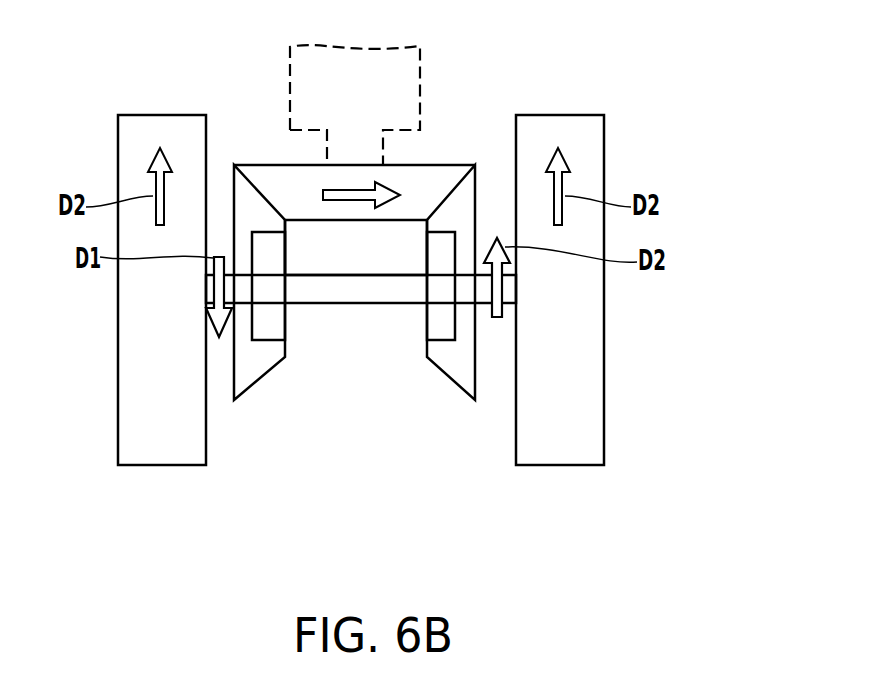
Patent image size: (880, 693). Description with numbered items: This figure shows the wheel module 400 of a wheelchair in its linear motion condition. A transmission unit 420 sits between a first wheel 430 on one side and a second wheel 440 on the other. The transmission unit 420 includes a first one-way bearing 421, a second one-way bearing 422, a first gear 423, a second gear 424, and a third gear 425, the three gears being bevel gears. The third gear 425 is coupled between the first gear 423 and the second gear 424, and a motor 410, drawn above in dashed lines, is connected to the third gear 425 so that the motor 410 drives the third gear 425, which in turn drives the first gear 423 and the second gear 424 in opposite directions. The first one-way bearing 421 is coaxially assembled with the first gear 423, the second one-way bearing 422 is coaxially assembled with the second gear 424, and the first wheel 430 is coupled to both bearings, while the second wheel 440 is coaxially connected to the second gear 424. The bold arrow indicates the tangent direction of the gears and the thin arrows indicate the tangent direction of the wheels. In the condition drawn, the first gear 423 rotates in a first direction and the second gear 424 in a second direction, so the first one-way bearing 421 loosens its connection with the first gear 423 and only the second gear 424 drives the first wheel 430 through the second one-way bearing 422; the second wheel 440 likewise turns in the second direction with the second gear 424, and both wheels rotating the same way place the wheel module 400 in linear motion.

The wheel module 400 is at (634, 56).
The motor 410 is at (290, 68).
The transmission unit 420 is at (507, 532).
The first one-way bearing 421 is at (275, 322).
The second one-way bearing 422 is at (435, 322).
The first gear 423 is at (247, 363).
The second gear 424 is at (463, 363).
The third gear 425 is at (345, 212).
The first wheel 430 is at (163, 453).
The second wheel 440 is at (562, 453).